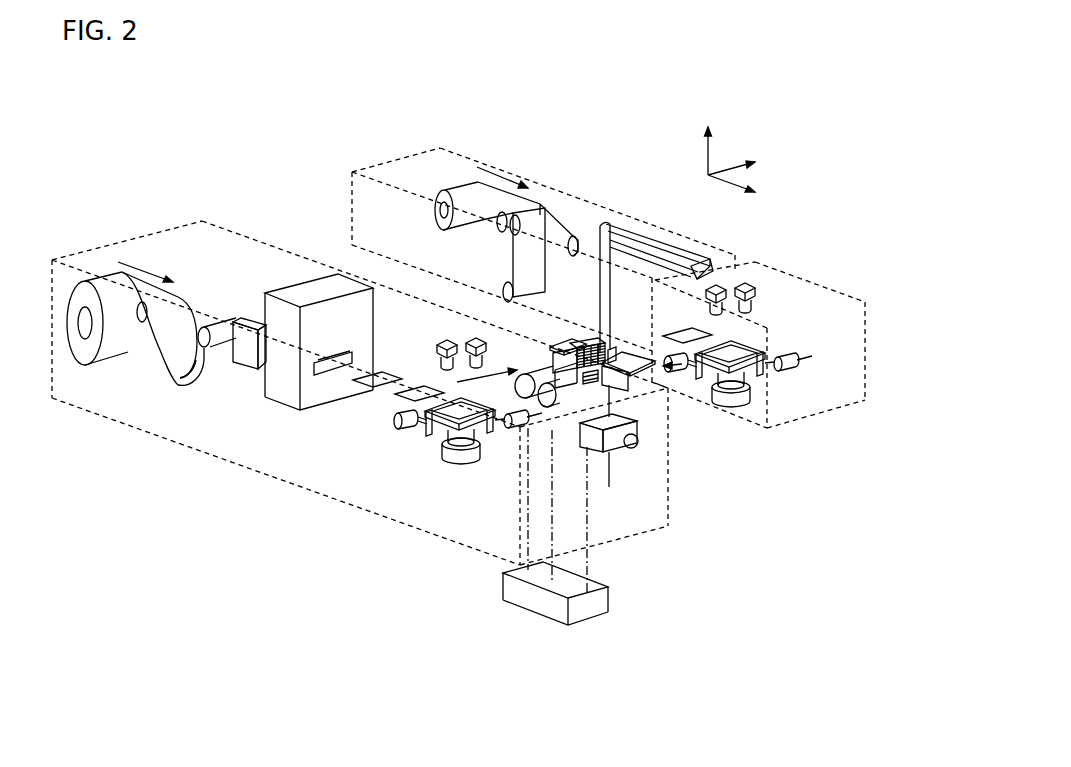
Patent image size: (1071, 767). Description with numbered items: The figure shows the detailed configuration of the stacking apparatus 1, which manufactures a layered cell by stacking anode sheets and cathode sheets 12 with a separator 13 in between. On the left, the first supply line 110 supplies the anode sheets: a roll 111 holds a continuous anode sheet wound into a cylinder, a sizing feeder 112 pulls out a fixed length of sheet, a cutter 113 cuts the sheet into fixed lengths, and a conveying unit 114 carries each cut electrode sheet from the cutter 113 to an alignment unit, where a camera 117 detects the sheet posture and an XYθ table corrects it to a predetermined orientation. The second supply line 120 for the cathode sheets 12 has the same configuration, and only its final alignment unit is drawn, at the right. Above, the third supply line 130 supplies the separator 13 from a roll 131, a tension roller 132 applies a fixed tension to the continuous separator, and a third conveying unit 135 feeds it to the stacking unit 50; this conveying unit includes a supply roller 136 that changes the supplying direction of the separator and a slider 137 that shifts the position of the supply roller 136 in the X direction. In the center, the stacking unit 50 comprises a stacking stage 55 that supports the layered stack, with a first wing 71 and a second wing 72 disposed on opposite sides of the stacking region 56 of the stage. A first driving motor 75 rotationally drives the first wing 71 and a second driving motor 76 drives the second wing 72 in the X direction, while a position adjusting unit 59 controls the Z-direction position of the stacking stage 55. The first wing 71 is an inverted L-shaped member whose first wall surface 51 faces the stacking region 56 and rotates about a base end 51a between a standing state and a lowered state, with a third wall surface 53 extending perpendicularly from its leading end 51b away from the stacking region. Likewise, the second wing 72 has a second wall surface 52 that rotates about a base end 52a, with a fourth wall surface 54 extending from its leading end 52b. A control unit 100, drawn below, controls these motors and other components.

The stacking apparatus 1 is at (267, 182).
The cathode sheet 12 is at (737, 350).
The separator 13 is at (543, 213).
The stacking unit 50 is at (645, 460).
The first wall surface 51 is at (555, 380).
The base end 51a is at (586, 343).
The leading end 51b is at (597, 340).
The second wall surface 52 is at (612, 392).
The base end 52a is at (617, 382).
The leading end 52b is at (625, 350).
The third wall surface 53 is at (580, 338).
The fourth wall surface 54 is at (612, 352).
The stacking stage 55 is at (603, 388).
The stacking region 56 is at (590, 390).
The position adjusting unit 59 is at (587, 457).
The first wing 71 is at (566, 342).
The second wing 72 is at (622, 374).
The first driving motor 75 is at (522, 373).
The second driving motor 76 is at (515, 397).
The control unit 100 is at (595, 600).
The first supply line 110 is at (185, 237).
The roll 111 is at (113, 353).
The sizing feeder 112 is at (235, 373).
The cutter 113 is at (280, 392).
The conveying unit 114 is at (365, 417).
The camera 117 is at (445, 340).
The second supply line 120 is at (795, 293).
The third supply line 130 is at (443, 167).
The roll 131 is at (440, 220).
The tension roller 132 is at (503, 290).
The third conveying unit 135 is at (637, 223).
The supply roller 136 is at (573, 237).
The slider 137 is at (692, 260).